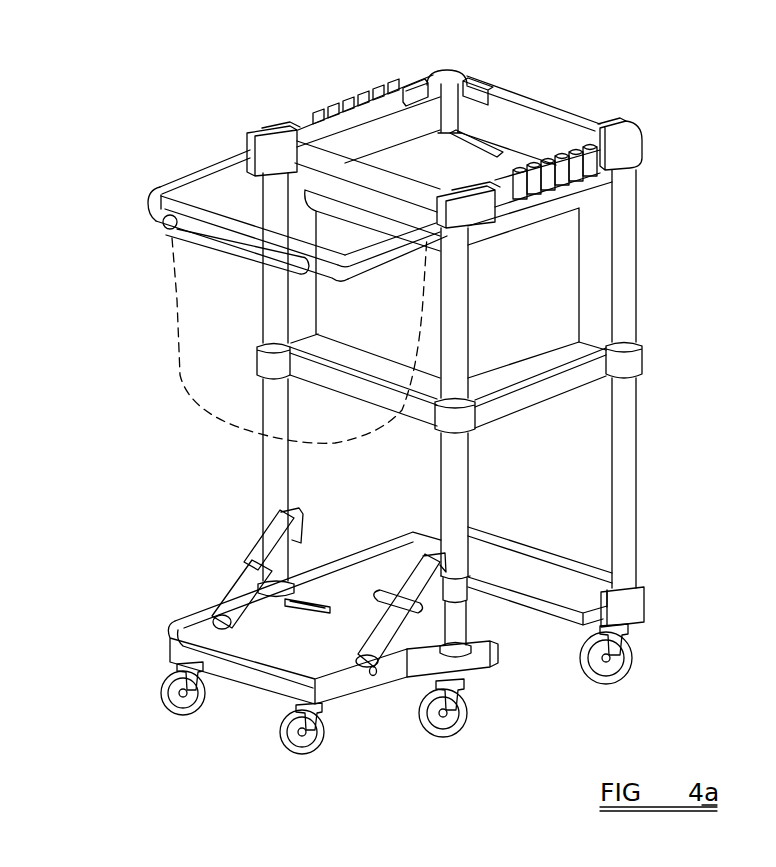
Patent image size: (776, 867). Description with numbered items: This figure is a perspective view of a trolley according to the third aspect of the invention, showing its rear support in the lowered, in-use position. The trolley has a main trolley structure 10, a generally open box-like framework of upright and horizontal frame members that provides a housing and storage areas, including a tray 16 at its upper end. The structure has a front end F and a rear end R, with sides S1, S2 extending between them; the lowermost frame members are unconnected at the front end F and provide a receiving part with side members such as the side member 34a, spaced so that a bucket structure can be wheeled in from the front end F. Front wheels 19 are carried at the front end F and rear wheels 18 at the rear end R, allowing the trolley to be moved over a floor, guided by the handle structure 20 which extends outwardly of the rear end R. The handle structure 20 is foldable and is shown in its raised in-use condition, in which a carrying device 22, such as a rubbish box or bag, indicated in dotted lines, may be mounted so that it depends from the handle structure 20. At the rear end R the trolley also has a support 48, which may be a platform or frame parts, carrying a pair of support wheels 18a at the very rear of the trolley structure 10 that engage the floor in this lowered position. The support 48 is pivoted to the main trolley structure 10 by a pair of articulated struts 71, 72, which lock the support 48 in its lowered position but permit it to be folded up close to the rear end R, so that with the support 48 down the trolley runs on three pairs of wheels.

The main trolley structure 10 is at (656, 362).
The tray 16 is at (545, 265).
The rear wheels 18 is at (468, 722).
The support wheels 18a is at (162, 693).
The front wheels 19 is at (632, 675).
The handle structure 20 is at (186, 160).
The carrying device 22 is at (188, 323).
The side member 34a is at (536, 578).
The support 48 is at (287, 653).
The articulated strut 71 is at (248, 598).
The articulated strut 72 is at (418, 585).
The side S1 is at (570, 440).
The side S2 is at (338, 470).
The front end F is at (691, 243).
The rear end R is at (189, 421).